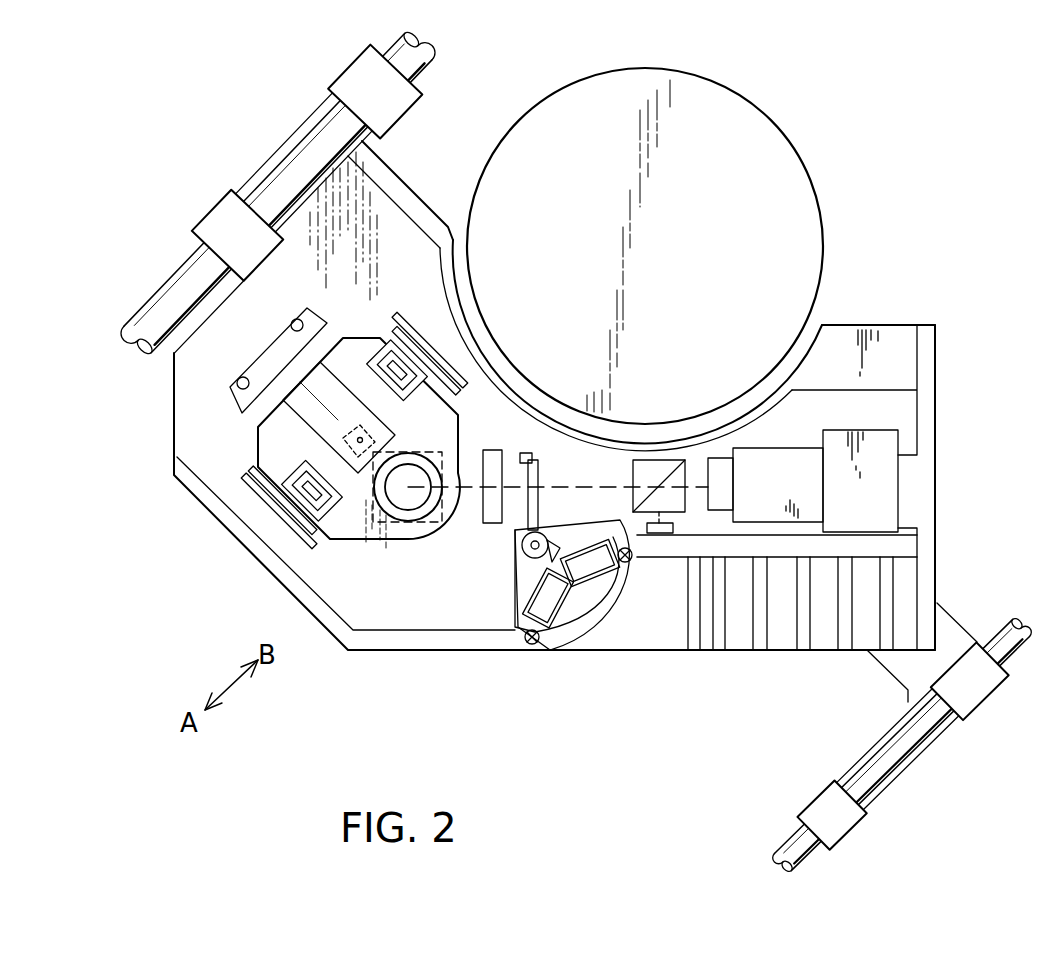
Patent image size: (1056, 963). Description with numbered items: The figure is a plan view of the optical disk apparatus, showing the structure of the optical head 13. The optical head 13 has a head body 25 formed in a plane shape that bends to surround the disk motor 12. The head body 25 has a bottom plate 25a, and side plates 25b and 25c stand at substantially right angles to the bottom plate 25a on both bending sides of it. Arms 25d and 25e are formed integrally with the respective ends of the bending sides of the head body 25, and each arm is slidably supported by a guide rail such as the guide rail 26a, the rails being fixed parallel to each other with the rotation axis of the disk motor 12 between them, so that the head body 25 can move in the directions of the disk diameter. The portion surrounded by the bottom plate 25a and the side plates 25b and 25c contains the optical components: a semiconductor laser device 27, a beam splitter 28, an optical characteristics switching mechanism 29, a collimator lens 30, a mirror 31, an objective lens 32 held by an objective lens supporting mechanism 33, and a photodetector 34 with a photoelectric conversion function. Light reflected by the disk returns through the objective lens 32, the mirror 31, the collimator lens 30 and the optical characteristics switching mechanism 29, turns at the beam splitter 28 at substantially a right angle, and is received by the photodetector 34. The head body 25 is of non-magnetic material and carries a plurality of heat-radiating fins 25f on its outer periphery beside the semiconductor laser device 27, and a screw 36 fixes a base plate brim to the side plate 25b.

The disk motor 12 is at (820, 224).
The optical head 13 is at (972, 458).
The head body 25 is at (172, 411).
The bottom plate 25a is at (383, 212).
The side plate 25b is at (813, 873).
The side plate 25c is at (447, 223).
The arm 25d is at (276, 158).
The arm 25e is at (918, 768).
The heat-radiating fins 25f is at (797, 625).
The guide rail 26a is at (155, 302).
The semiconductor laser device 27 is at (722, 457).
The beam splitter 28 is at (633, 495).
The optical characteristics switching mechanism 29 is at (506, 574).
The collimator lens 30 is at (494, 523).
The mirror 31 is at (436, 520).
The objective lens 32 is at (400, 498).
The objective lens supporting mechanism 33 is at (260, 436).
The photodetector 34 is at (682, 532).
The screw 36 is at (542, 646).